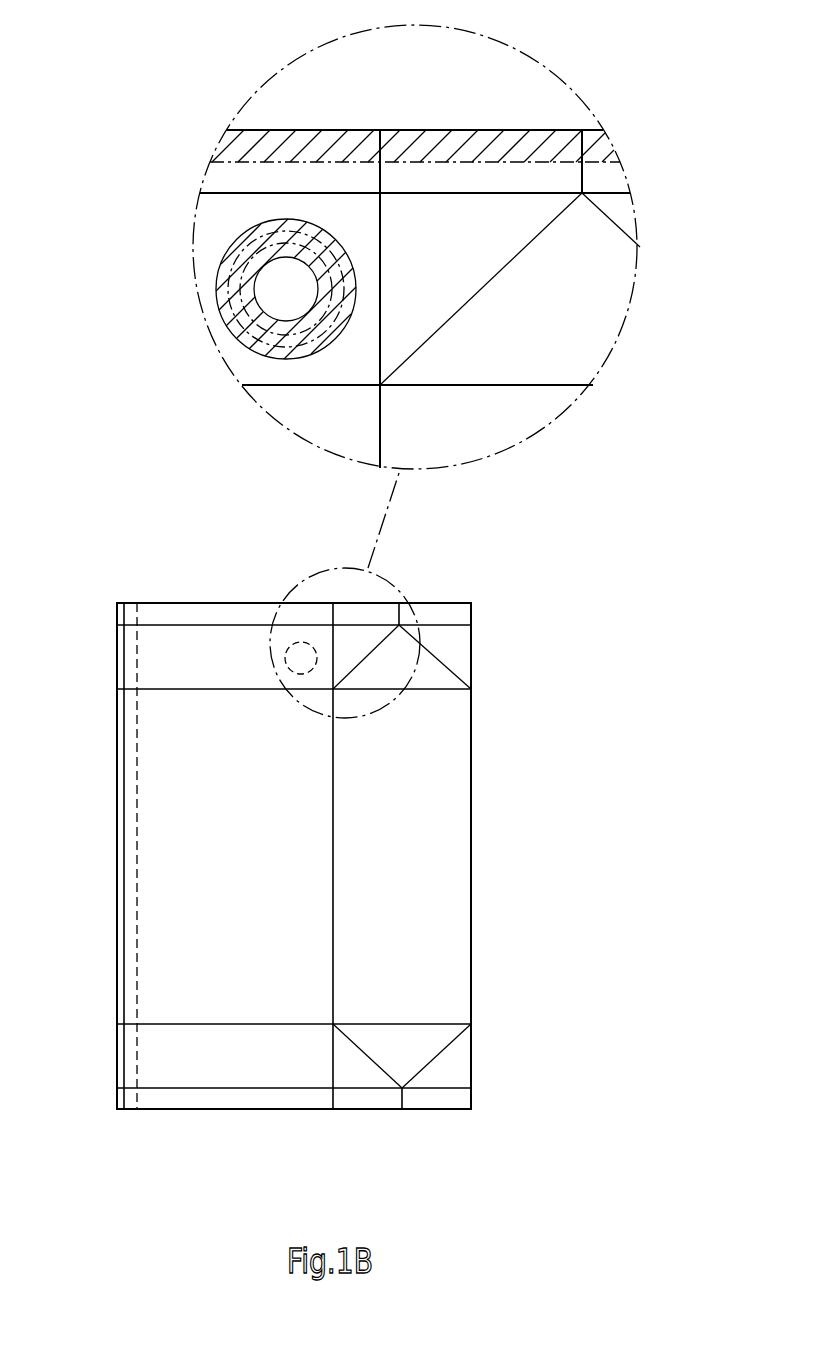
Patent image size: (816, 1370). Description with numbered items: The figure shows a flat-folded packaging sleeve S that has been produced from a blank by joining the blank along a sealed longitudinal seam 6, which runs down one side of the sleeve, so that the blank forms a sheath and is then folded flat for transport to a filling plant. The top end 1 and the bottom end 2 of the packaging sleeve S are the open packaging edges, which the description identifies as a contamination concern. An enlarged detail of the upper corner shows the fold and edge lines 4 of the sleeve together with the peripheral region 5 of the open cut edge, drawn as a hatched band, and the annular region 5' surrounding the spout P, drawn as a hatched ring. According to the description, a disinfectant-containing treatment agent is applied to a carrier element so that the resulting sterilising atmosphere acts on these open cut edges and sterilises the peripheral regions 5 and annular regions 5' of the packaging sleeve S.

The top end of package 1 is at (213, 615).
The bottom end of package 2 is at (215, 1097).
The fold lines / edges 4 is at (240, 193).
The peripheral region 5 is at (415, 114).
The annular region 5' is at (263, 316).
The longitudinal seam 6 is at (132, 848).
The spout P is at (237, 288).
The packaging sleeve S is at (270, 869).